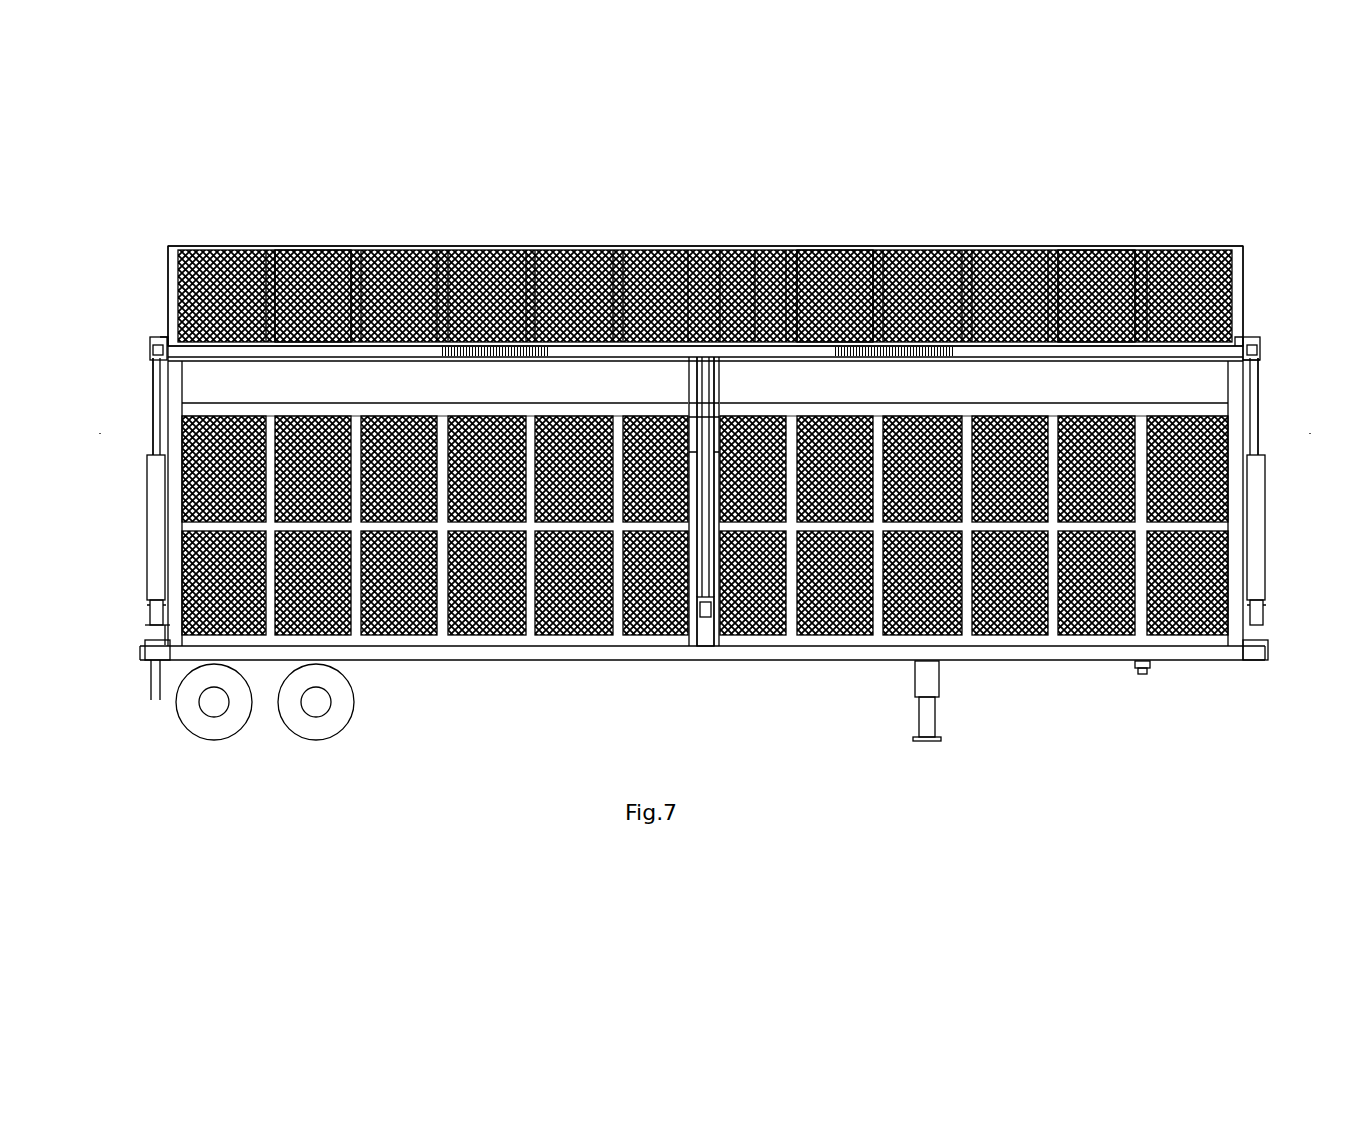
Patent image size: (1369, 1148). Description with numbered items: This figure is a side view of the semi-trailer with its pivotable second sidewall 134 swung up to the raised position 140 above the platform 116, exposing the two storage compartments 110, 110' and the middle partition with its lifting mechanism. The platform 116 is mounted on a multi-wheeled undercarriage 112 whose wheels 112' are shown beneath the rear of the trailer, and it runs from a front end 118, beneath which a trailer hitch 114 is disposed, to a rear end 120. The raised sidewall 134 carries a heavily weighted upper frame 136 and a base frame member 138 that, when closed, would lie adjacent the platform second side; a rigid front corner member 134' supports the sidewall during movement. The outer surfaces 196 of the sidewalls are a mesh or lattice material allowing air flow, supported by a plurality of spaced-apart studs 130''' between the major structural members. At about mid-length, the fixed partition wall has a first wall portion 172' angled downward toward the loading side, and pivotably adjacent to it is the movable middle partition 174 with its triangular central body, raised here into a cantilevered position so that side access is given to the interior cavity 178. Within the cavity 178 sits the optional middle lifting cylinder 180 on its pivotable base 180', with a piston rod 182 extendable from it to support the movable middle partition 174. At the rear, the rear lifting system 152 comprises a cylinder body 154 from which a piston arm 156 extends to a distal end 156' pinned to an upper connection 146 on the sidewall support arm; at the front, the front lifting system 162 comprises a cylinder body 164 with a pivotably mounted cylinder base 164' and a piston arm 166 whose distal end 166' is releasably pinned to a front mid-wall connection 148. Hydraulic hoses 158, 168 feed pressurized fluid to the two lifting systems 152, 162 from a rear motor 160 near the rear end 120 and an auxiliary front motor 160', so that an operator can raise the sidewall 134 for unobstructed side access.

The storage compartment 110 is at (974, 392).
The storage compartment 110' is at (435, 389).
The multi-wheeled undercarriage 112 is at (265, 744).
The wheel hub 112' is at (263, 733).
The trailer hitch 114 is at (1142, 674).
The platform 116 is at (1208, 648).
The front end 118 is at (927, 710).
The rear end 120 is at (155, 660).
The spaced-apart stud 130''' is at (974, 567).
The second sidewall 134 is at (705, 205).
The front corner member 134' is at (1285, 286).
The upper frame 136 is at (490, 248).
The base frame member 138 is at (808, 356).
The raised position 140 is at (100, 366).
The upper connection 146 is at (165, 340).
The front mid-wall connection 148 is at (1255, 342).
The rear lifting system 152 is at (108, 502).
The cylinder body 154 is at (147, 560).
The piston arm 156 is at (119, 339).
The distal end 156' is at (104, 320).
The hydraulic hose 158 is at (150, 610).
The rear motor 160 is at (117, 670).
The front motor 160' is at (1298, 665).
The front lifting system 162 is at (1288, 502).
The cylinder body 164 is at (1303, 479).
The cylinder base 164' is at (1303, 595).
The piston arm 166 is at (1301, 350).
The distal end 166' is at (1301, 334).
The hydraulic hose 168 is at (1266, 612).
The first wall portion 172' is at (647, 526).
The movable middle partition 174 is at (720, 380).
The interior cavity 178 is at (705, 654).
The middle lifting cylinder 180 is at (614, 553).
The pivotable base 180' is at (662, 661).
The piston rod 182 is at (700, 388).
The outer surfaces 196 is at (1100, 272).